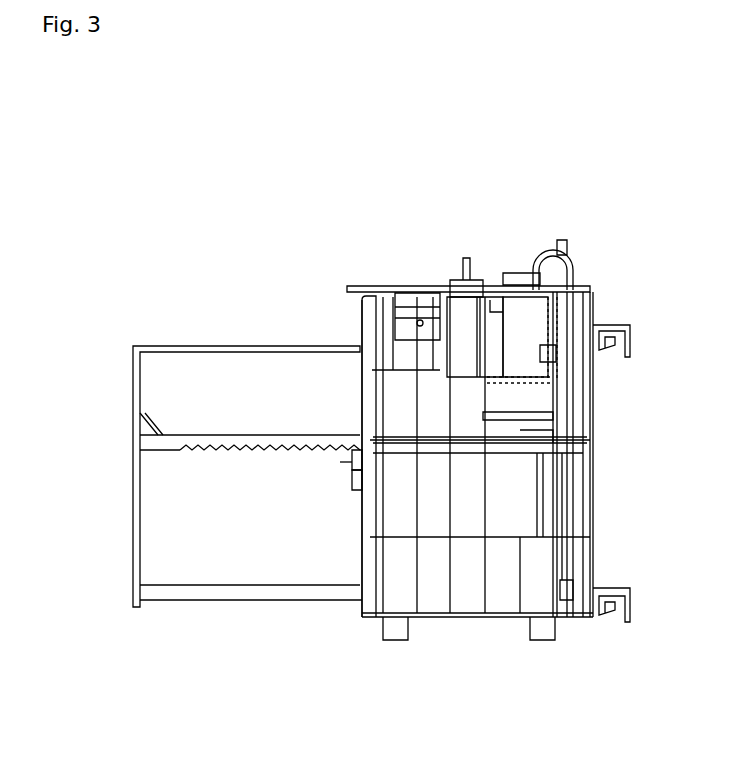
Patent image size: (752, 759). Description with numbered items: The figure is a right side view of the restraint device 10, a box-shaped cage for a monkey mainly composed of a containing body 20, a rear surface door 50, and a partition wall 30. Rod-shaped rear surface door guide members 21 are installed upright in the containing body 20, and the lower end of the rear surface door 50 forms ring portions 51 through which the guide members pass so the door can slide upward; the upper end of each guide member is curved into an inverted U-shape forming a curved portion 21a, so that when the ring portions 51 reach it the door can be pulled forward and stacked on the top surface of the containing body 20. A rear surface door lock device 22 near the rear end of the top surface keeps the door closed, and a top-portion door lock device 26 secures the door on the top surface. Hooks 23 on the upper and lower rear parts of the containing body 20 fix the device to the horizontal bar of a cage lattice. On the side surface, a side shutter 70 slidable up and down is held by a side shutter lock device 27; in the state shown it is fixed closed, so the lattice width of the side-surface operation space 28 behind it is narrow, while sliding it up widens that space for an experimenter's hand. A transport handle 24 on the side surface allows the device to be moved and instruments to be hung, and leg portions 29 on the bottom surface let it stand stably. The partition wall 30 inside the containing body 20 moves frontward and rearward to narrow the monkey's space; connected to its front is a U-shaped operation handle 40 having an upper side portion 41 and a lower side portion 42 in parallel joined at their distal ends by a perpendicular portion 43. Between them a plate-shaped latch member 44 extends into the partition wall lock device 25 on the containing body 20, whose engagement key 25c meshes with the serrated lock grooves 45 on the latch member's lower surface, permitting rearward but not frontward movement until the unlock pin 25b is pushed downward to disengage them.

The restraint device 10 is at (512, 124).
The containing body 20 is at (350, 300).
The rear surface door guide member 21 is at (573, 425).
The curved portion 21a is at (540, 245).
The rear surface door lock device 22 is at (516, 283).
The hook 23 is at (633, 330).
The transport handle 24 is at (500, 443).
The partition wall lock device 25 is at (350, 480).
The unlock pin 25b is at (350, 462).
The engagement key 25c is at (358, 448).
The top-portion door lock device 26 is at (460, 283).
The side shutter lock device 27 is at (410, 318).
The side-surface operation space 28 is at (517, 333).
The leg portion 29 is at (398, 632).
The partition wall 30 is at (370, 515).
The operation handle 40 is at (152, 690).
The upper side portion 41 is at (165, 350).
The lower side portion 42 is at (150, 597).
The perpendicular portion 43 is at (133, 527).
The latch member 44 is at (250, 450).
The lock groove 45 is at (232, 455).
The rear surface door 50 is at (578, 243).
The ring portion 51 is at (580, 580).
The side shutter 70 is at (540, 357).